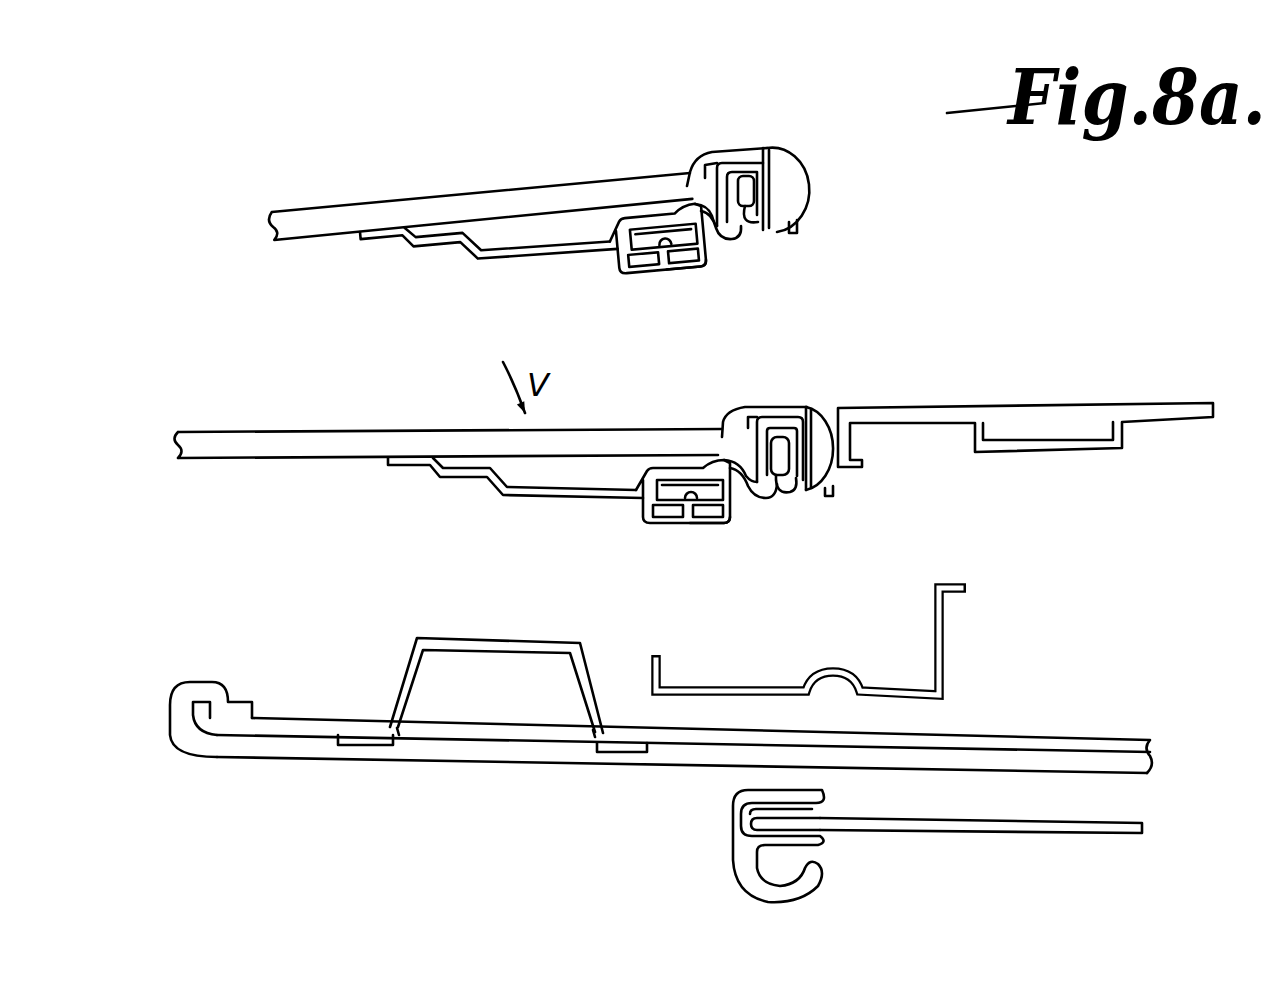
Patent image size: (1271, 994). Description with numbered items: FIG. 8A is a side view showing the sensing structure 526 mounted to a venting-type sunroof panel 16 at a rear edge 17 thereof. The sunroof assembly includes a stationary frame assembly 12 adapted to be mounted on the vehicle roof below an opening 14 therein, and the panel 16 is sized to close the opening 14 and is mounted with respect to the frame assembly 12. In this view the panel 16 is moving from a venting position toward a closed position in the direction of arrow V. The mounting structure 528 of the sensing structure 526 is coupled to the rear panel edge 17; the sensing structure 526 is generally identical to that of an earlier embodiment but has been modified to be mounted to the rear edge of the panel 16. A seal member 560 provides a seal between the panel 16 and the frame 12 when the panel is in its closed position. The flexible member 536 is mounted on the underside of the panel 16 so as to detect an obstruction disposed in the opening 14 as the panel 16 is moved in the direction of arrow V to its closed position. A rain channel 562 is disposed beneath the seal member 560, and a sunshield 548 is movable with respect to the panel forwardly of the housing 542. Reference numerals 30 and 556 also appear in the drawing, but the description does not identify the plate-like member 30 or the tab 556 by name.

The frame assembly 12 is at (962, 407).
The opening 14 is at (826, 407).
The sunroof panel 16 is at (400, 430).
The rear edge 17 is at (700, 177).
The mounting plate 30 is at (640, 242).
The sensing structure 526 is at (636, 517).
The mounting structure 528 is at (725, 532).
The flexible member 536 is at (676, 527).
The housing 542 is at (968, 835).
The sunshield 548 is at (318, 755).
The tab 556 is at (667, 253).
The seal member 560 is at (800, 200).
The rain channel 562 is at (945, 648).